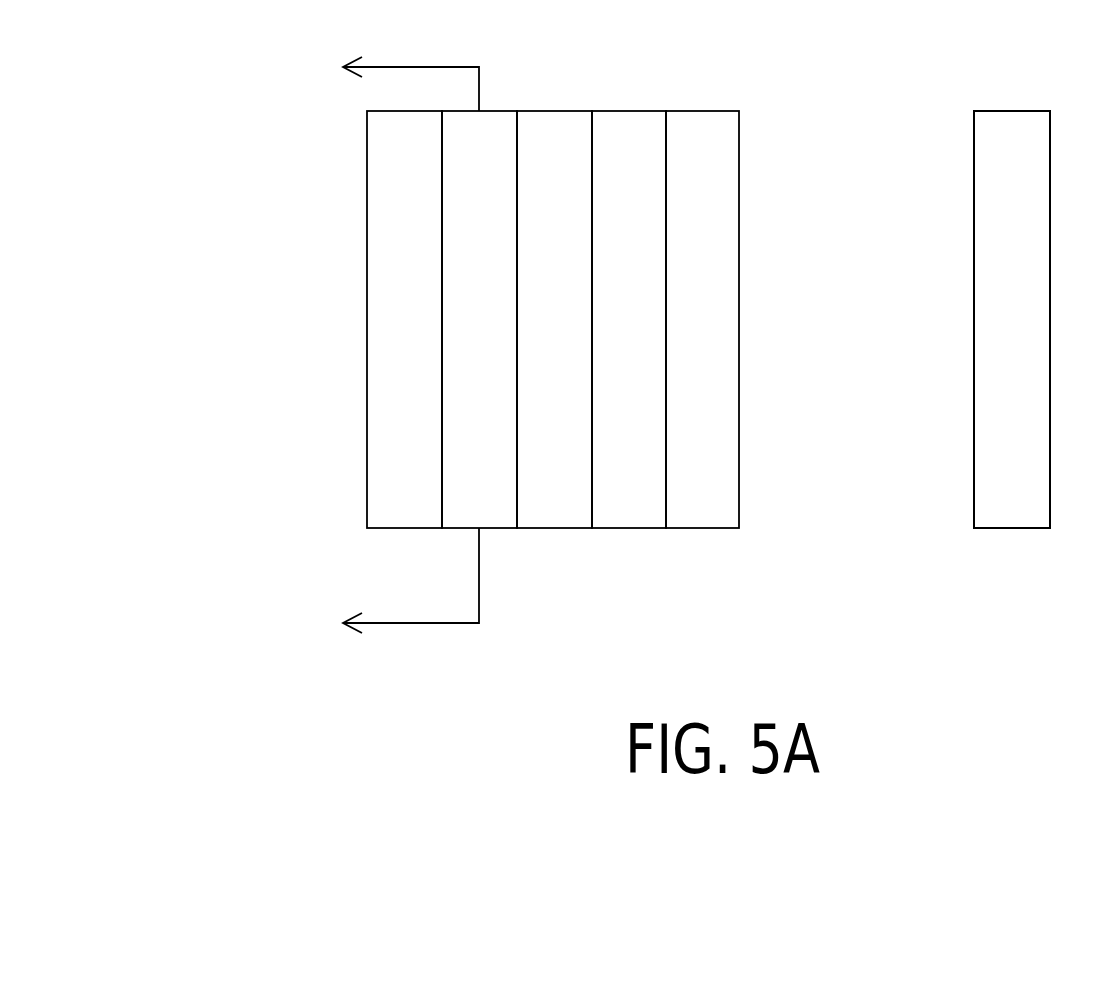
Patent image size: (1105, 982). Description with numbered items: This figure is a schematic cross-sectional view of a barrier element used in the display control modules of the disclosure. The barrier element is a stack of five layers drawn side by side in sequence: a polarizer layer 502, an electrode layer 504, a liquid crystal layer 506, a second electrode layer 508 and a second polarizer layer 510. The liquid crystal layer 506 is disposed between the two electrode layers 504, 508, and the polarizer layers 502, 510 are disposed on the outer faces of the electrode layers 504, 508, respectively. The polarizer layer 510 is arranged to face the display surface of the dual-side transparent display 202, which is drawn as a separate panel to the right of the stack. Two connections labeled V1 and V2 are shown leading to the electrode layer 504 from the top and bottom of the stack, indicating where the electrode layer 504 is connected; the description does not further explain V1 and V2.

The polarizer layer 502 is at (403, 513).
The electrode layer 504 is at (501, 512).
The liquid crystal layer 506 is at (558, 513).
The electrode layer 508 is at (635, 513).
The polarizer layer 510 is at (708, 513).
The dual-side transparent display 202 is at (1012, 513).
The first voltage V1 is at (388, 77).
The second voltage V2 is at (388, 588).